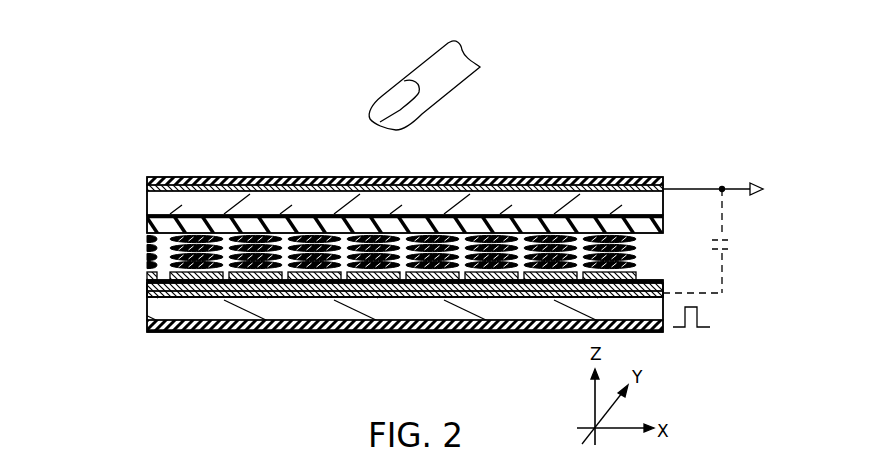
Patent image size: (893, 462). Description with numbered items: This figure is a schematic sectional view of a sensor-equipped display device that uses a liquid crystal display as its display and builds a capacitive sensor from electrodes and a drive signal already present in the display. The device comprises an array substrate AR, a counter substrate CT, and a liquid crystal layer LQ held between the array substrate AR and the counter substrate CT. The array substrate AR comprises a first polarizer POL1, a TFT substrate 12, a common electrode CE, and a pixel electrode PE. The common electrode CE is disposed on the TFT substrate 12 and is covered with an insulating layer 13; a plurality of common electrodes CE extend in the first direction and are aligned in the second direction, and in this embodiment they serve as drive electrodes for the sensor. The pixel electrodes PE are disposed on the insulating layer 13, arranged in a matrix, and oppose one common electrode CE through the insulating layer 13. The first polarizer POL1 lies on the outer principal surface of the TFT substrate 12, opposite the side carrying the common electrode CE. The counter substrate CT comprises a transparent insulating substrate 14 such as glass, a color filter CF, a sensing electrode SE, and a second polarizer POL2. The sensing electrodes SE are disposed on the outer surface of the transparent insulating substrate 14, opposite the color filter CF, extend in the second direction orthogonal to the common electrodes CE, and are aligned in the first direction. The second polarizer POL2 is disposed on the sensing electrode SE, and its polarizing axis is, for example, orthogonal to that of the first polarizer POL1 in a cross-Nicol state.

The counter substrate CT is at (101, 233).
The second polarizer POL2 is at (174, 177).
The sensing electrode SE is at (147, 187).
The transparent insulating substrate 14 is at (147, 203).
The color filter CF is at (147, 223).
The liquid crystal layer LQ is at (130, 247).
The array substrate AR is at (74, 260).
The pixel electrode PE is at (147, 276).
The insulating layer 13 is at (132, 289).
The common electrode CE is at (147, 298).
The TFT substrate 12 is at (147, 316).
The first polarizer POL1 is at (194, 333).